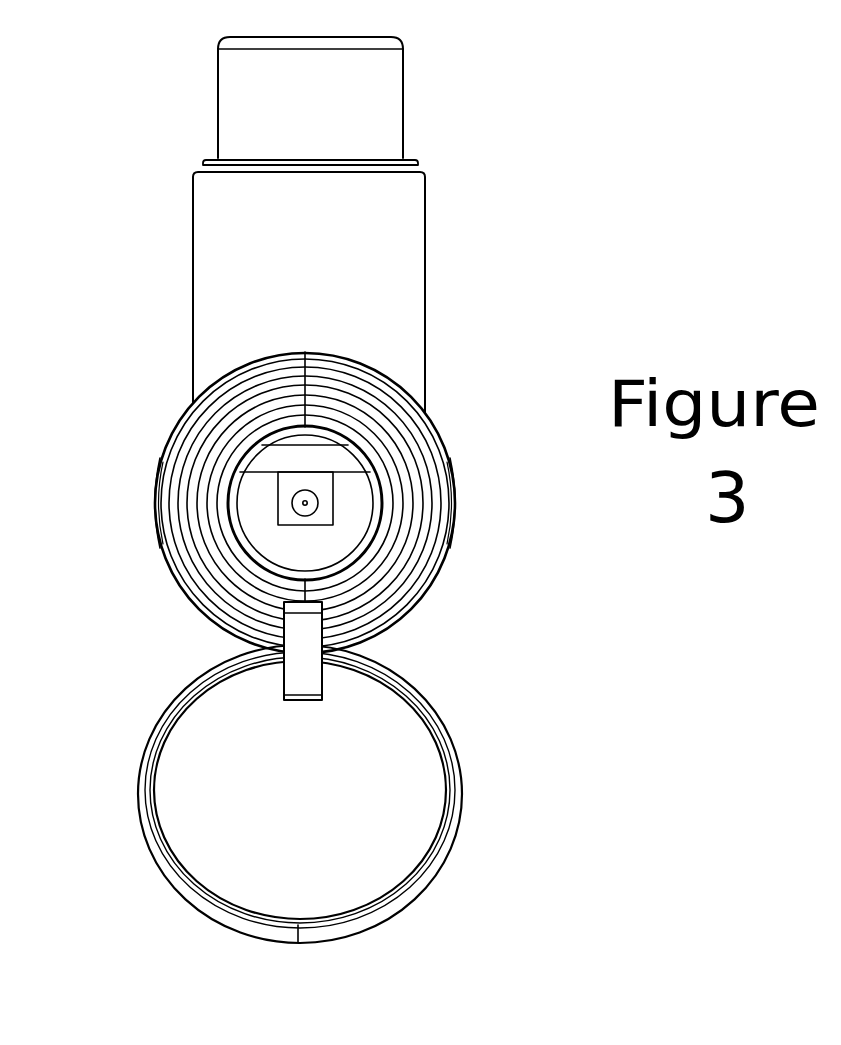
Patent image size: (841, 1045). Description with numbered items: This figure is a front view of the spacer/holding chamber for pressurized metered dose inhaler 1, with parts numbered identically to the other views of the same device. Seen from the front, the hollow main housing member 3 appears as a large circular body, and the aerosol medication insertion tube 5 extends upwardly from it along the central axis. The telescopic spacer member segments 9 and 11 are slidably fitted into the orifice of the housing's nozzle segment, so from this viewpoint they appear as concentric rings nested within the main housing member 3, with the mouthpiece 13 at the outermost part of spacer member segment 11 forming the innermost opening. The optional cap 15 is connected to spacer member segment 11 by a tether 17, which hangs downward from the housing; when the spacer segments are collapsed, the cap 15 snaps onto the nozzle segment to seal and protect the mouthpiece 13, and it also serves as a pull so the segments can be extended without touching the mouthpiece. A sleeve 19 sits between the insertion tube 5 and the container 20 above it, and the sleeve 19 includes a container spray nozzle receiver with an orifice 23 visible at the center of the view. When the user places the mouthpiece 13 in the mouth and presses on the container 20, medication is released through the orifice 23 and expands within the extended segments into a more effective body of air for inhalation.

The spacer/holding chamber for pressurized metered dose inhaler 1 is at (42, 148).
The main housing member 3 is at (283, 519).
The aerosol medication insertion tube 5 is at (400, 302).
The telescopic spacer member segment 9 is at (185, 453).
The telescopic spacer member segment 11 is at (193, 492).
The mouthpiece 13 is at (228, 538).
The cap 15 is at (462, 768).
The tether 17 is at (297, 665).
The sleeve 19 is at (405, 166).
The container 20 is at (370, 120).
The orifice 23 is at (312, 503).